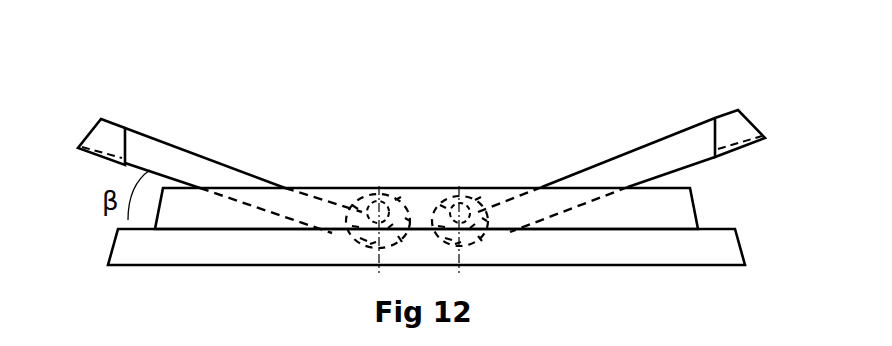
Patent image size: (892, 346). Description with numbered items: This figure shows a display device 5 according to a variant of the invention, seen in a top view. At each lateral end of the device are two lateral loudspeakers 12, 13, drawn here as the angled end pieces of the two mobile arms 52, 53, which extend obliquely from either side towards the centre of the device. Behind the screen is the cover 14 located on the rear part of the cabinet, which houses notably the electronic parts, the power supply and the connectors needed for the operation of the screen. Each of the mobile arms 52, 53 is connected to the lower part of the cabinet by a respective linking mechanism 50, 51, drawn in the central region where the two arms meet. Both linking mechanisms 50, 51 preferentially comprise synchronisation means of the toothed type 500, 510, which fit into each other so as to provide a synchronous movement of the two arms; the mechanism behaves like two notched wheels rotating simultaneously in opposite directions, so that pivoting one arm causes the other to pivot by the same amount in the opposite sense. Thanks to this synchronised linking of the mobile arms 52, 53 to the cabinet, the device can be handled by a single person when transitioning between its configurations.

The display device 5 is at (193, 74).
The lateral loudspeaker 12 is at (80, 147).
The lateral loudspeaker 13 is at (738, 110).
The cover 14 is at (315, 192).
The linking mechanism 50 is at (390, 203).
The toothed synchronisation means 500 is at (410, 227).
The toothed synchronisation means 510 is at (427, 198).
The linking mechanism 51 is at (495, 223).
The mobile arm 52 is at (213, 162).
The mobile arm 53 is at (637, 146).